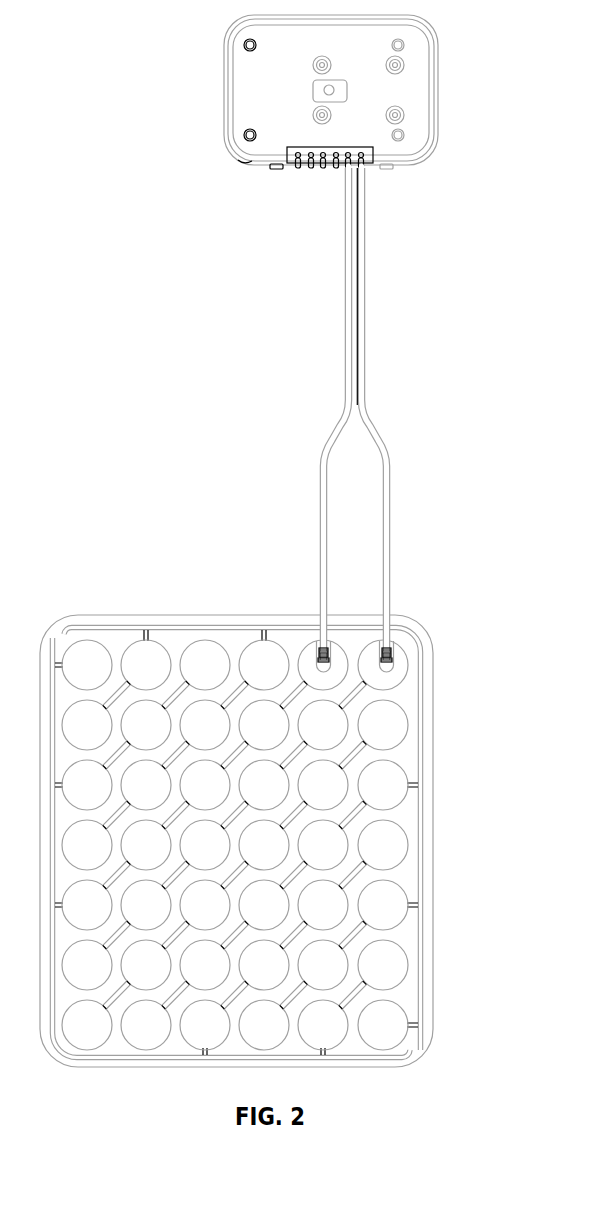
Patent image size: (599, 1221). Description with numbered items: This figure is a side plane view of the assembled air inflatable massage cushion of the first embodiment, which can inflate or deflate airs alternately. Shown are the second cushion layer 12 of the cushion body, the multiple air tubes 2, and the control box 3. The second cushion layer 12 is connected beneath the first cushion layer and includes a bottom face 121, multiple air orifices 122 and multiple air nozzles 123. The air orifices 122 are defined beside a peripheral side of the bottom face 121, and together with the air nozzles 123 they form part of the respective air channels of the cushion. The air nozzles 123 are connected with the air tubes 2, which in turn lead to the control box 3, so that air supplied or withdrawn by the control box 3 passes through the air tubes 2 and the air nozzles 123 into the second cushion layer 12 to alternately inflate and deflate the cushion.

The air tube 2 is at (380, 413).
The control box 3 is at (348, 92).
The second cushion layer 12 is at (261, 841).
The bottom face 121 is at (276, 845).
The air orifice 122 is at (405, 646).
The air nozzle 123 is at (400, 618).